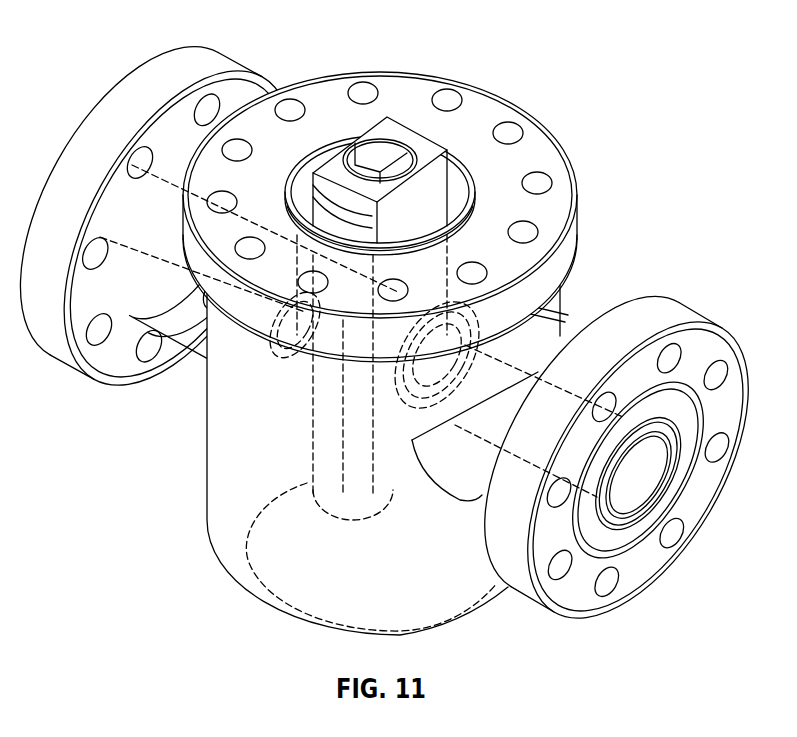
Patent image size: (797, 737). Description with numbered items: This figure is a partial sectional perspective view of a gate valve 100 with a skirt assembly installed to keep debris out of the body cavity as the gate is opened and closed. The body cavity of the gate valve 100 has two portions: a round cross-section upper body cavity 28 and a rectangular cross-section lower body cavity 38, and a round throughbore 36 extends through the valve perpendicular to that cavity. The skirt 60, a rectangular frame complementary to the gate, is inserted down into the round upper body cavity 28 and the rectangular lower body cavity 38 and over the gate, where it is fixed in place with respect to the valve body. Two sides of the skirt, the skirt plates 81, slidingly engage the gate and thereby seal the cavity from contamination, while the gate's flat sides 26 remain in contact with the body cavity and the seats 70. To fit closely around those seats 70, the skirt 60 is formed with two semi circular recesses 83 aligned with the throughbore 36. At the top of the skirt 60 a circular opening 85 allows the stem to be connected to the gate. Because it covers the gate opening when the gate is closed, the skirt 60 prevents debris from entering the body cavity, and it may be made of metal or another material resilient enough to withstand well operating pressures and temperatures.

The gate valve 100 is at (396, 327).
The skirt 60 is at (410, 97).
The circular opening 85 is at (356, 160).
The skirt plates 81 is at (453, 167).
The round cross-section upper body cavity 28 is at (428, 177).
The flat sides 26 is at (452, 194).
The semi circular recesses 83 is at (433, 256).
The seats 70 is at (404, 348).
The rectangular cross-section lower body cavity 38 is at (328, 464).
The throughbore 36 is at (638, 471).